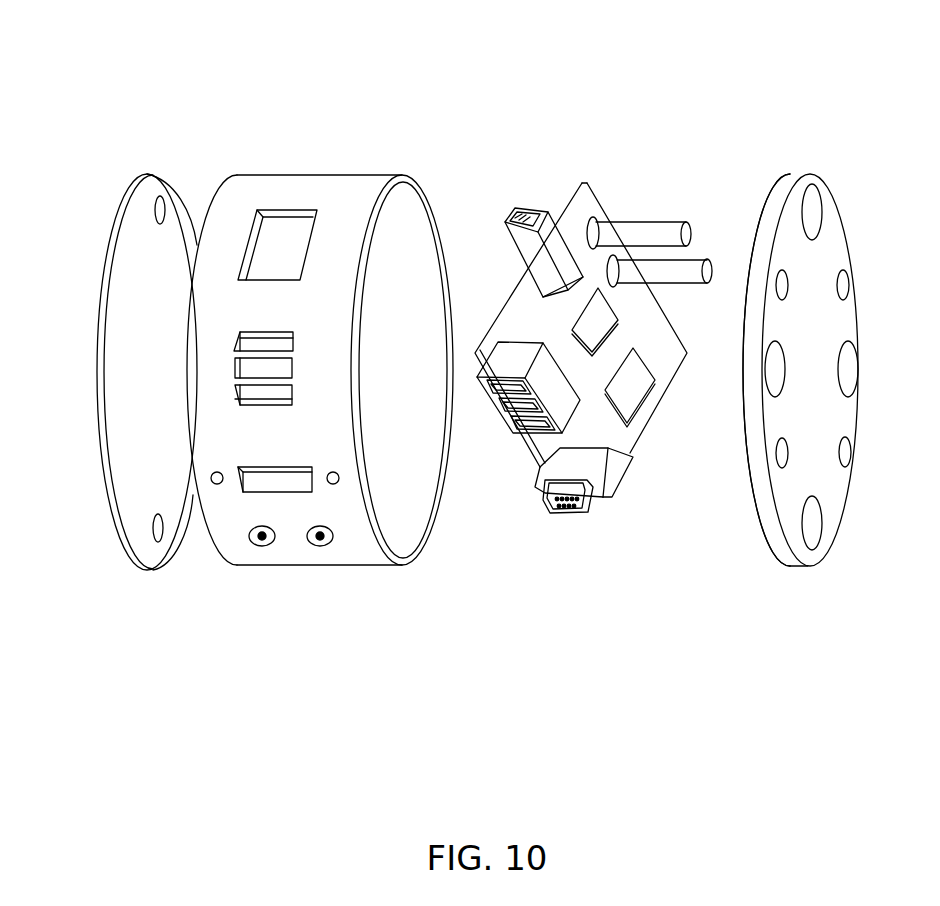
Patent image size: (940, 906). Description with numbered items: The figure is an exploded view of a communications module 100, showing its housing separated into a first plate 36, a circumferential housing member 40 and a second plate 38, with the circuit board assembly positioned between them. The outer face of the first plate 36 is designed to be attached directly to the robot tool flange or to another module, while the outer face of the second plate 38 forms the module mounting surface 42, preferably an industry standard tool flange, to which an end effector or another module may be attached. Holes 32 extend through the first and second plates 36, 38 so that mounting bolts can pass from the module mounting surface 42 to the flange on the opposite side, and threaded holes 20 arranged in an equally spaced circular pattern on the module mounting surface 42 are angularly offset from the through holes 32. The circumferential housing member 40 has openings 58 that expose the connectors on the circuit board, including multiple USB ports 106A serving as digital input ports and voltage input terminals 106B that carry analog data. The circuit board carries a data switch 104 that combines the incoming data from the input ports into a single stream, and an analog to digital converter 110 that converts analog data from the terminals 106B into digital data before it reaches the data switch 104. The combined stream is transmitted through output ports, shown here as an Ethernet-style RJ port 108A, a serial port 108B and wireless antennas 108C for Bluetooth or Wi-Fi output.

The communications module 100 is at (668, 58).
The first plate 36 is at (100, 320).
The holes 32 is at (162, 196).
The circumferential housing member 40 is at (290, 566).
The ports openings 58 is at (297, 210).
The voltage input terminals 106B is at (252, 545).
The data switch 104 is at (598, 326).
The analog to digital converter 110 is at (640, 395).
The RJ-45 port 108A is at (508, 208).
The wireless port 108C is at (644, 222).
The USB port 106A is at (488, 405).
The serial port 108B is at (625, 476).
The second plate 38 is at (858, 326).
The module mounting surface 42 is at (792, 492).
The threaded holes 20 is at (850, 283).